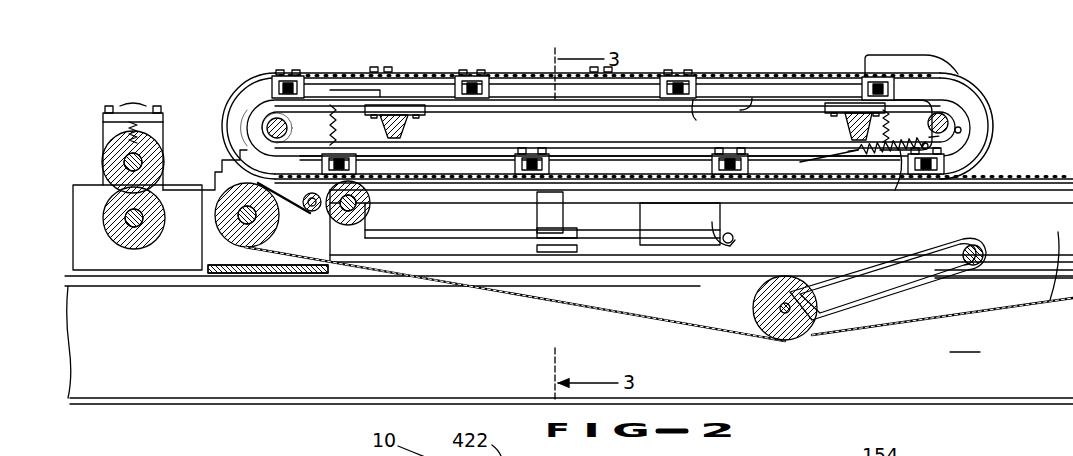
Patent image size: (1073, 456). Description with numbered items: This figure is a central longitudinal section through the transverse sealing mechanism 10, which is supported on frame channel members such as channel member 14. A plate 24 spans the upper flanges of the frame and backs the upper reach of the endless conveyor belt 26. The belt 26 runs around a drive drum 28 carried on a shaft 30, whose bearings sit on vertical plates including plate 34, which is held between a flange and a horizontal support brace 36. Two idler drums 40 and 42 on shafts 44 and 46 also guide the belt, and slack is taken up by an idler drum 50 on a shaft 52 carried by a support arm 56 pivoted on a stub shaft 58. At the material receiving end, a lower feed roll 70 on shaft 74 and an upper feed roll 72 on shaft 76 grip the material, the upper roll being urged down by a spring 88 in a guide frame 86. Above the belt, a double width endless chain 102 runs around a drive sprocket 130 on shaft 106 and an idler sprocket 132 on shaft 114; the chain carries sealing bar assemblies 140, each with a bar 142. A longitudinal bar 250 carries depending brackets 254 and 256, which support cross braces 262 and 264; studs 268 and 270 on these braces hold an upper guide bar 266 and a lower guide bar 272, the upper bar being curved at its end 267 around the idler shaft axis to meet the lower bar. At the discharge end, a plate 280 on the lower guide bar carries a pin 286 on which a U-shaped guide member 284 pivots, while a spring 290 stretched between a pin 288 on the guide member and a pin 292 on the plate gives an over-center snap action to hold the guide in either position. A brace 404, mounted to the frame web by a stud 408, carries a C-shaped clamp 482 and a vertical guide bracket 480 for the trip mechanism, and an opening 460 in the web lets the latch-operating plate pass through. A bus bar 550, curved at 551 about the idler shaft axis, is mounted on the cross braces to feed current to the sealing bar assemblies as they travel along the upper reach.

The transverse sealing mechanism 10 is at (230, 84).
The channel member 14 is at (965, 341).
The plate 24 is at (938, 186).
The endless conveyor belt 26 is at (1065, 185).
The drive drum 28 is at (216, 225).
The shaft 30 is at (216, 210).
The vertical plate 34 is at (215, 268).
The support brace 36 is at (262, 270).
The idler drum 40 is at (314, 211).
The idler drum 42 is at (366, 198).
The shaft 44 is at (312, 213).
The shaft 46 is at (366, 210).
The idler drum 50 is at (785, 292).
The shaft 52 is at (760, 308).
The support arm 56 is at (922, 264).
The stub shaft 58 is at (990, 252).
The lower feed roll 70 is at (108, 211).
The upper feed roll 72 is at (105, 154).
The shaft 74 is at (126, 222).
The shaft 76 is at (126, 166).
The guide frame 86 is at (105, 116).
The spring 88 is at (128, 126).
The endless chain 102 is at (977, 95).
The shaft 106 is at (950, 118).
The shaft 114 is at (288, 129).
The drive sprocket 130 is at (975, 103).
The idler sprocket 132 is at (242, 100).
The sealing bar assembly 140 is at (270, 77).
The bar 142 is at (290, 78).
The bar 250 is at (448, 82).
The bracket 254 is at (425, 68).
The bracket 256 is at (848, 86).
The cross brace 262 is at (400, 126).
The cross brace 264 is at (842, 128).
The guide bar 266 is at (752, 102).
The curved end of guide bar 267 is at (243, 121).
The stud 268 is at (402, 140).
The stud 270 is at (856, 142).
The guide bar 272 is at (455, 152).
The plate 280 is at (884, 170).
The U-shaped guide member 284 is at (963, 100).
The pin 286 is at (930, 146).
The pin 288 is at (962, 130).
The spring 290 is at (930, 124).
The pin 292 is at (855, 152).
The brace 404 is at (716, 234).
The stud 408 is at (734, 237).
The opening 460 is at (705, 204).
The vertical guide bracket 480 is at (540, 212).
The C-shaped clamp structure 482 is at (570, 232).
The bus bar 550 is at (697, 150).
The curved portion of bus bar 551 is at (258, 130).